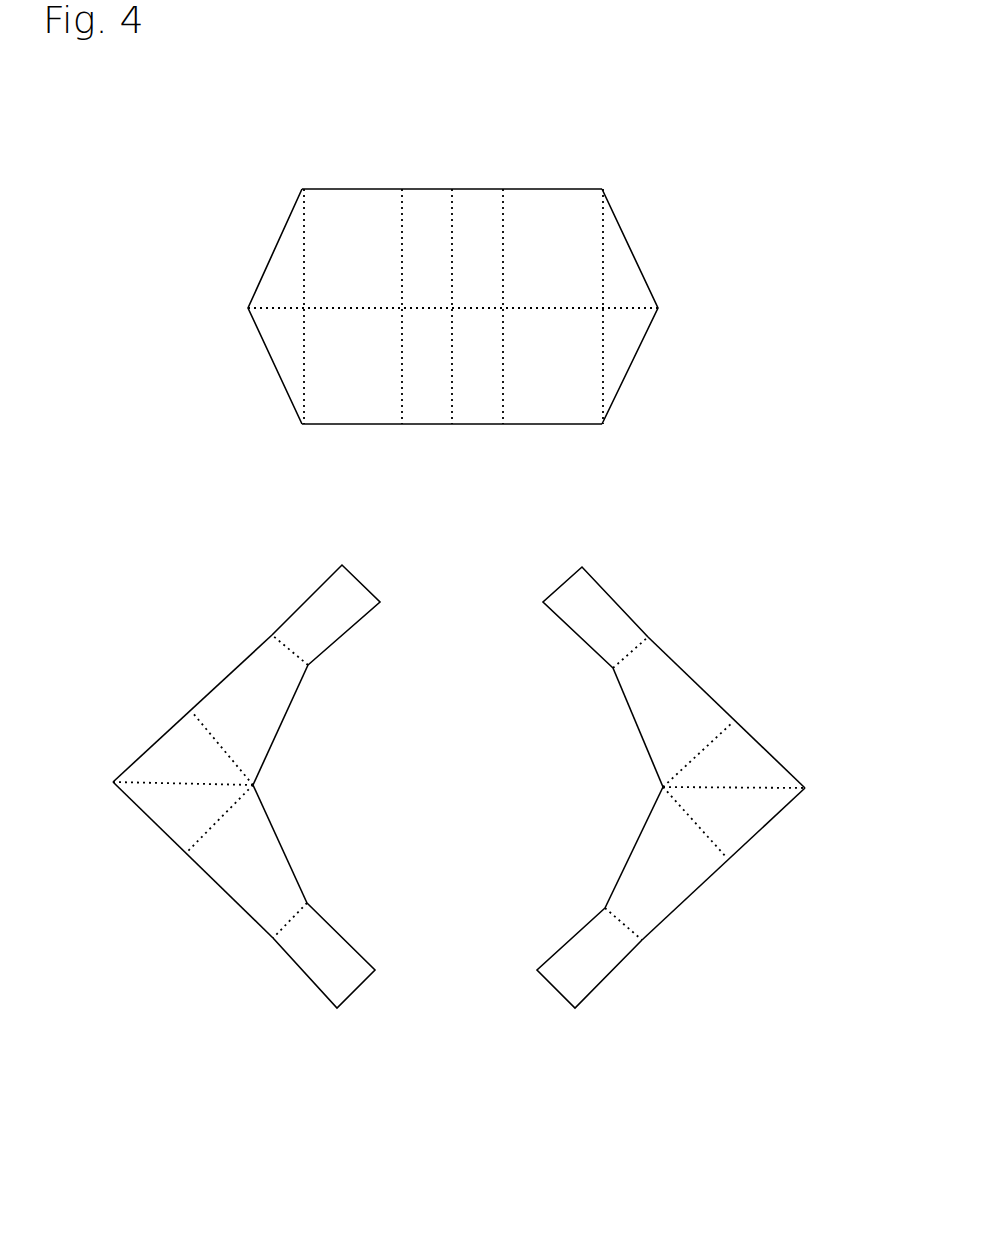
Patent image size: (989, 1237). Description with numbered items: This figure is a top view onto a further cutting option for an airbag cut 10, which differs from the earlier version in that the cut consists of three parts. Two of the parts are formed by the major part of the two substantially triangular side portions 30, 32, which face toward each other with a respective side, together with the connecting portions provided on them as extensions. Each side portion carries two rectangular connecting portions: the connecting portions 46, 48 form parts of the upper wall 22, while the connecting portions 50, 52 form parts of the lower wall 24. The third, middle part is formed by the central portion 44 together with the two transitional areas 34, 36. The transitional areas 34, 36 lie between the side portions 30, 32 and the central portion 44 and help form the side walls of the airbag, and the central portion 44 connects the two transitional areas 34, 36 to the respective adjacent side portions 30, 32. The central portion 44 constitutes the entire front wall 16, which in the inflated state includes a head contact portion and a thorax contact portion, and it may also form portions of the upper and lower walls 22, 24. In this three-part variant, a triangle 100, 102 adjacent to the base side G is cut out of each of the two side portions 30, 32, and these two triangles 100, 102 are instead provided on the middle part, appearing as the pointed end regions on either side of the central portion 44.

The blank 10 is at (130, 543).
The front wall 16 is at (493, 299).
The upper wall 22 is at (300, 588).
The lower wall 24 is at (280, 967).
The side portion 30 is at (173, 748).
The side portion 32 is at (747, 767).
The transitional area 34 is at (330, 202).
The transitional area 36 is at (560, 225).
The central portion 44 is at (480, 413).
The connecting portion 46 is at (343, 598).
The connecting portion 48 is at (587, 615).
The connecting portion 50 is at (330, 975).
The connecting portion 52 is at (588, 967).
The triangle 100 is at (288, 363).
The triangle 102 is at (618, 362).
The base side G is at (288, 260).